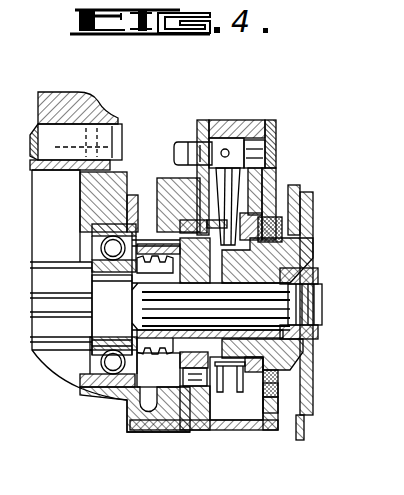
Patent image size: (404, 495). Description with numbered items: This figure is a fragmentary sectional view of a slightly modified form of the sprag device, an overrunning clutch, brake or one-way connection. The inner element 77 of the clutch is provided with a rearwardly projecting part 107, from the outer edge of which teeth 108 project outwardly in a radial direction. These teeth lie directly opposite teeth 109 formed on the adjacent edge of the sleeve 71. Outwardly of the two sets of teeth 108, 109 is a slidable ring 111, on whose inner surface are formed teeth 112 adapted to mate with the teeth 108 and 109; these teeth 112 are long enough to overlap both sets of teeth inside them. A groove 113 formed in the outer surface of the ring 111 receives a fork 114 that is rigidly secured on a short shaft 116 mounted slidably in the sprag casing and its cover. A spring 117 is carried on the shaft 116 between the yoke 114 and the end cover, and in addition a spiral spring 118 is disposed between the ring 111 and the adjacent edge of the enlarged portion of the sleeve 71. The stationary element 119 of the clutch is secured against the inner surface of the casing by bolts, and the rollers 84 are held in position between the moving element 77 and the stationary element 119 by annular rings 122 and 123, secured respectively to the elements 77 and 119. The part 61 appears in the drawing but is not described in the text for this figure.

The housing cap 61 is at (58, 138).
The sleeve 71 is at (290, 362).
The inner element 77 is at (90, 212).
The rollers 84 is at (187, 430).
The rearwardly projecting part 107 is at (220, 248).
The teeth 108 is at (193, 230).
The teeth 109 is at (272, 222).
The slidable ring 111 is at (266, 135).
The teeth 112 is at (278, 172).
The groove 113 is at (200, 80).
The fork 114 is at (233, 175).
The short shaft 116 is at (190, 143).
The spring 117 is at (258, 182).
The spiral spring 118 is at (305, 200).
The stationary element 119 is at (183, 195).
The annular ring 122 is at (147, 278).
The annular ring 123 is at (191, 165).